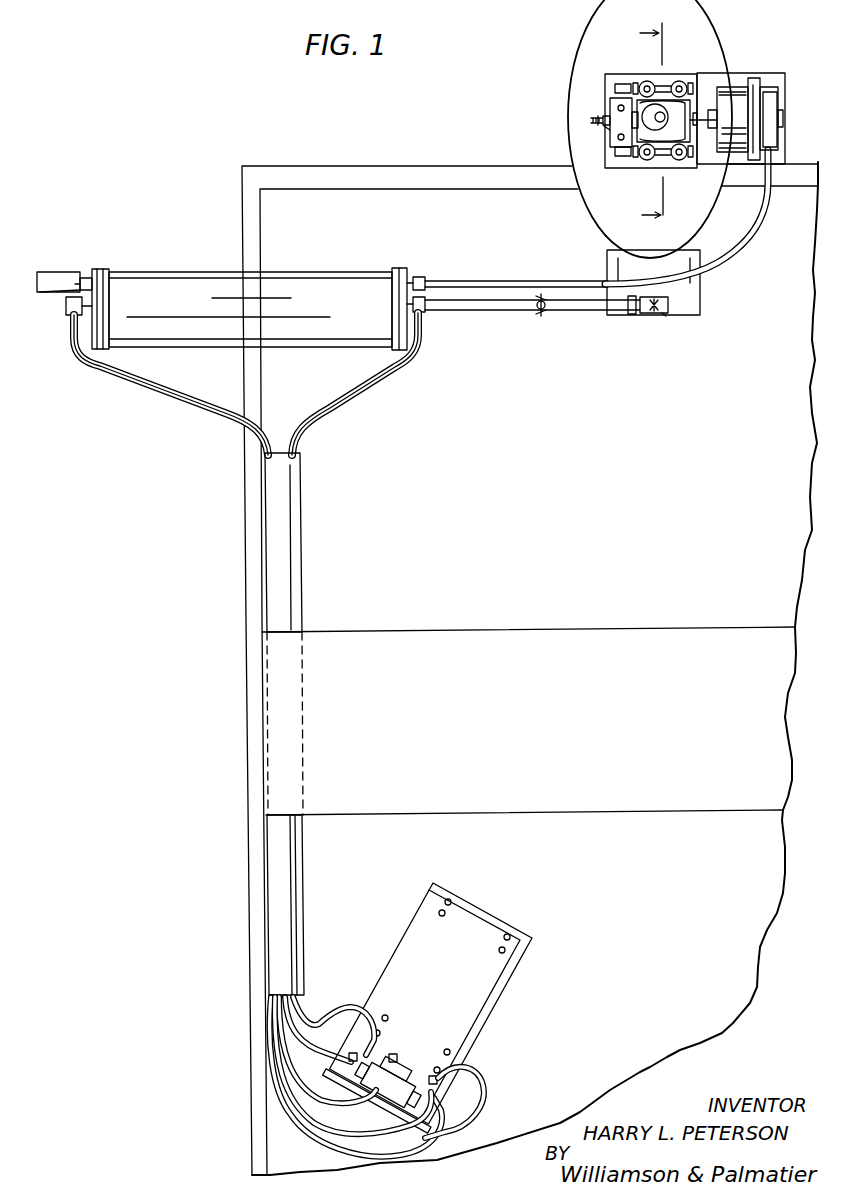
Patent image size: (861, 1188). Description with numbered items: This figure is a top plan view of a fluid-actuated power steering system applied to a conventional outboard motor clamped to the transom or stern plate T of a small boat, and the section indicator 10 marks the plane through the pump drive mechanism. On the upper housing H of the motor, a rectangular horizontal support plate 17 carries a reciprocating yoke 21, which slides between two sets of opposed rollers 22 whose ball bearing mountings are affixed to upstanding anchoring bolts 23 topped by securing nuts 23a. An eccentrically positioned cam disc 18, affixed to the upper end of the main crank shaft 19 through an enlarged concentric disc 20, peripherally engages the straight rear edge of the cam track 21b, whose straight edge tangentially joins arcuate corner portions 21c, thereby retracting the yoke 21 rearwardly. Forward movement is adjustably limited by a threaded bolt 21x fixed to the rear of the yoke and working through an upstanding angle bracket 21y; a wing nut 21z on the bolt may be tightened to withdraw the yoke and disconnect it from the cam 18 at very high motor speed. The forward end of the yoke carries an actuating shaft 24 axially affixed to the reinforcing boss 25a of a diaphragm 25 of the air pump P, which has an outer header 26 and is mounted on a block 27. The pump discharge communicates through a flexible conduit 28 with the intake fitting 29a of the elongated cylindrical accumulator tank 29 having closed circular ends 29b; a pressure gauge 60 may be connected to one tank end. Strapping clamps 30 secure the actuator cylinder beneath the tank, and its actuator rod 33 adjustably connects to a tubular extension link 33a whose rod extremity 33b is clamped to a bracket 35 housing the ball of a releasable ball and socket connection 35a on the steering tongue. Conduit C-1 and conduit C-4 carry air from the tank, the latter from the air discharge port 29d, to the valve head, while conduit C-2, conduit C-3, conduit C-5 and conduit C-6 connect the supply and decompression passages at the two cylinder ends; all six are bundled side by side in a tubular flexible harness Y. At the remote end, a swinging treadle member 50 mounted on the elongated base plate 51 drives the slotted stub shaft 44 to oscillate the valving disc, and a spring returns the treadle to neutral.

The transom or stern plate T is at (452, 175).
The upper housing H is at (571, 60).
The section line indicator 10 is at (637, 126).
The support plate 17 is at (607, 76).
The cam disc 18 is at (664, 121).
The main crank shaft 19 is at (640, 113).
The concentric disc 20 is at (648, 140).
The yoke 21 is at (690, 109).
The cam track 21b is at (640, 131).
The arcuate corner portions 21c is at (690, 104).
The threaded bolt 21x is at (608, 108).
The angle bracket 21y is at (605, 128).
The wing nut 21z is at (602, 118).
The rollers 22 is at (676, 83).
The anchoring bolts 23 is at (679, 81).
The securing nuts 23a is at (691, 84).
The actuating shaft 24 is at (702, 128).
The diaphragm 25 is at (736, 88).
The reinforcing boss 25a is at (715, 119).
The outer header 26 is at (772, 133).
The block 27 is at (786, 80).
The air pump P is at (769, 75).
The flexible conduit 28 is at (745, 240).
The accumulator tank 29 is at (186, 308).
The intake fitting 29a is at (426, 283).
The closed circular ends 29b is at (88, 277).
The air discharge port 29d is at (74, 306).
The strapping clamps 30 is at (400, 271).
The actuator rod 33 is at (482, 311).
The extension link 33a is at (565, 312).
The rod extremity 33b is at (634, 314).
The bracket 35 is at (668, 301).
The ball and socket connection 35a is at (662, 314).
The pressure gauge 60 is at (72, 274).
The conduit C-1 is at (352, 402).
The conduit C-2 is at (380, 1124).
The conduit C-3 is at (481, 1088).
The conduit C-4 is at (195, 399).
The conduit C-5 is at (327, 1050).
The conduit C-6 is at (346, 1010).
The flexible housing or harness Y is at (283, 582).
The stub shaft 44 is at (397, 1066).
The treadle member 50 is at (468, 987).
The base plate 51 is at (516, 973).